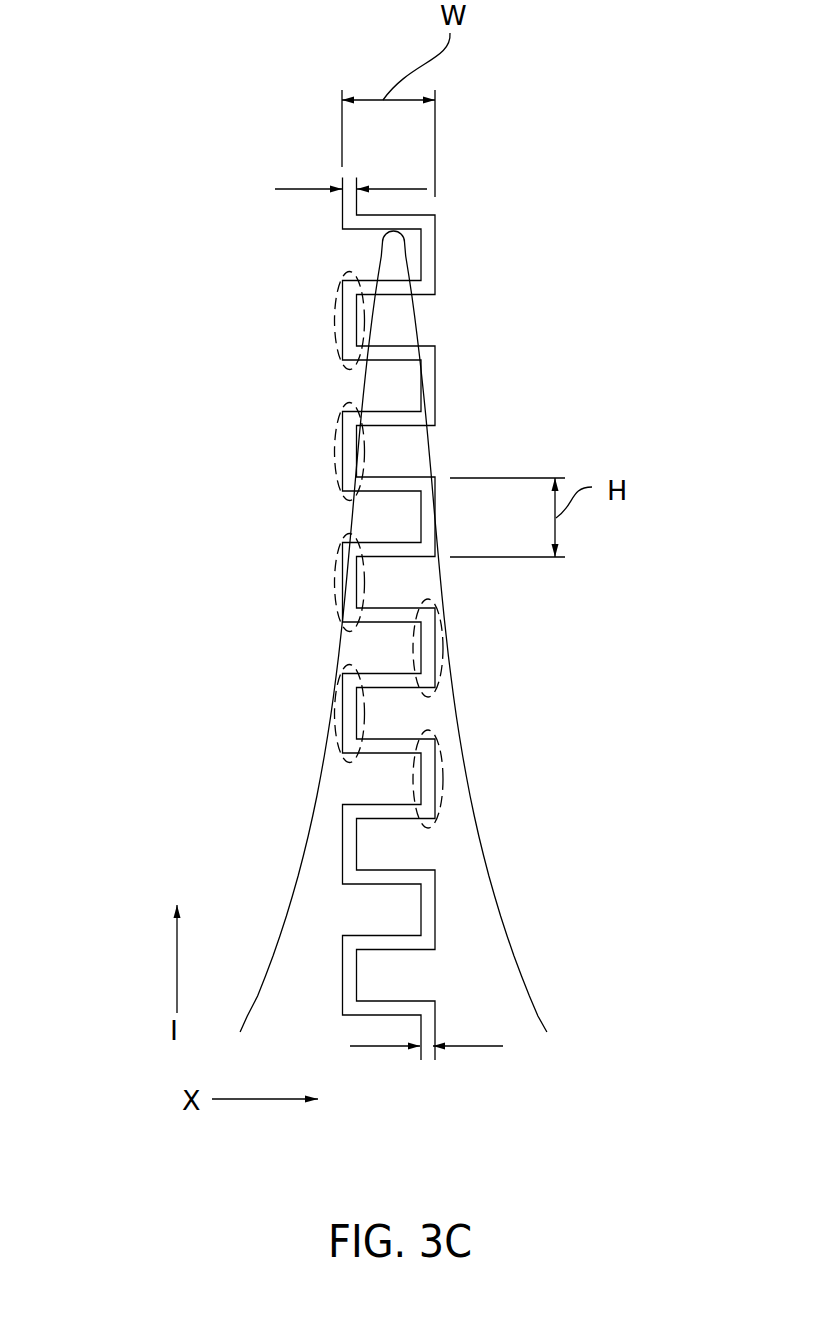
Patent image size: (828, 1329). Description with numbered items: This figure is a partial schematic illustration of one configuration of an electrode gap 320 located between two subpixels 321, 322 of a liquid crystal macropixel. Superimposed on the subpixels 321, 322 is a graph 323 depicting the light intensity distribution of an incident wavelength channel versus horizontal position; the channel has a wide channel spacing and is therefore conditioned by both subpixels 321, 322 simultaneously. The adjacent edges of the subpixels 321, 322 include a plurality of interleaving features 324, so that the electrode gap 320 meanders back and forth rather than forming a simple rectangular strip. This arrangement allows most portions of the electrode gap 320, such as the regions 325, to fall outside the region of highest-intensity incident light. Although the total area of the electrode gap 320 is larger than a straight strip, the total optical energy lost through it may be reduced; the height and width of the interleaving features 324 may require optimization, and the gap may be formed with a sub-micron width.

The electrode gap 320 is at (400, 187).
The subpixel 321 is at (148, 391).
The subpixel 322 is at (585, 266).
The graph 323 is at (497, 918).
The interleaving features 324 is at (403, 380).
The regions 325 is at (333, 333).